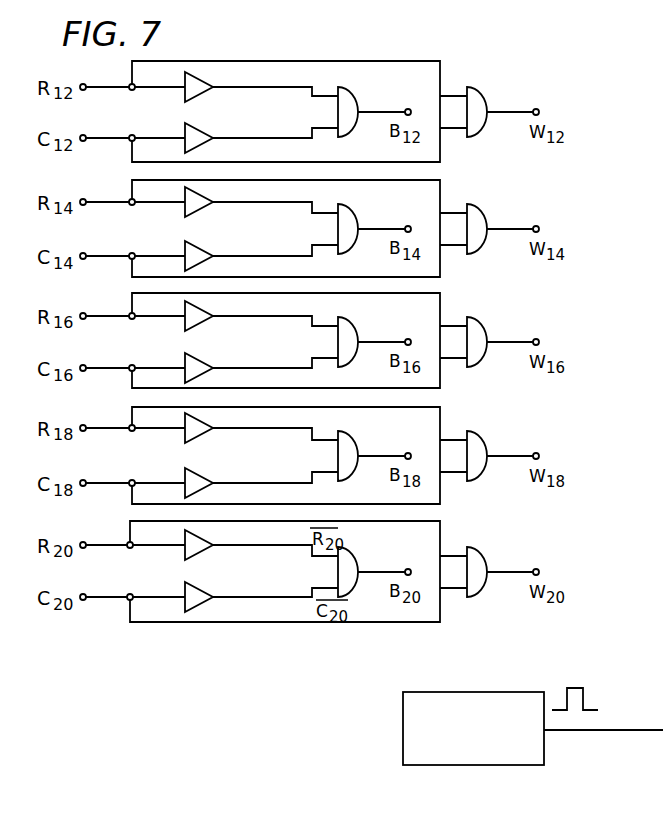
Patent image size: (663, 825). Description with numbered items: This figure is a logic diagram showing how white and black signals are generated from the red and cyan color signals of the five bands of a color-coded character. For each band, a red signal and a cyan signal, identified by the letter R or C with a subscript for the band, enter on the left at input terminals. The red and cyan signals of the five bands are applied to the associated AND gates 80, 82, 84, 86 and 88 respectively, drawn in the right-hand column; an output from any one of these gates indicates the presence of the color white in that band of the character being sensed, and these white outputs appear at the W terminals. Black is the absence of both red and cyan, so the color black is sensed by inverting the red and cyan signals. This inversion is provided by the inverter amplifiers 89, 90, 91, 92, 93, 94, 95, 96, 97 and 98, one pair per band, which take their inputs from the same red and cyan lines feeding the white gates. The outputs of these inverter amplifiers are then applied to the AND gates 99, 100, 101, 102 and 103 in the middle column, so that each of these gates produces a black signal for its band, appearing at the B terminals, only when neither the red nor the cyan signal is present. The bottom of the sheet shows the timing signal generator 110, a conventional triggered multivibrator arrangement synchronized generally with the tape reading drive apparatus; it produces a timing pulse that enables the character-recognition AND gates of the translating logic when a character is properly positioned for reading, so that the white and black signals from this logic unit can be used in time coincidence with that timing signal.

The AND gate 80 is at (483, 98).
The AND gate 82 is at (483, 215).
The AND gate 84 is at (483, 328).
The AND gate 86 is at (483, 442).
The AND gate 88 is at (483, 558).
The inverter amplifier 89 is at (195, 95).
The inverter amplifier 90 is at (201, 131).
The inverter amplifier 91 is at (195, 210).
The inverter amplifier 92 is at (201, 249).
The inverter amplifier 93 is at (195, 324).
The inverter amplifier 94 is at (201, 361).
The inverter amplifier 95 is at (195, 436).
The inverter amplifier 96 is at (201, 476).
The inverter amplifier 97 is at (195, 553).
The inverter amplifier 98 is at (201, 590).
The AND gate 99 is at (359, 103).
The AND gate 100 is at (359, 220).
The AND gate 101 is at (359, 333).
The AND gate 102 is at (359, 447).
The AND gate 103 is at (353, 565).
The timing signal generator 110 is at (403, 723).